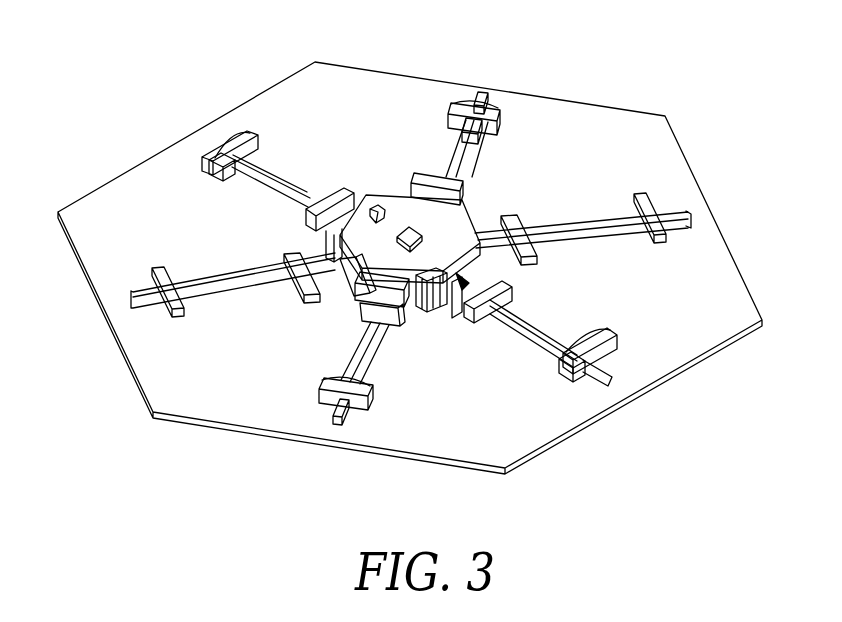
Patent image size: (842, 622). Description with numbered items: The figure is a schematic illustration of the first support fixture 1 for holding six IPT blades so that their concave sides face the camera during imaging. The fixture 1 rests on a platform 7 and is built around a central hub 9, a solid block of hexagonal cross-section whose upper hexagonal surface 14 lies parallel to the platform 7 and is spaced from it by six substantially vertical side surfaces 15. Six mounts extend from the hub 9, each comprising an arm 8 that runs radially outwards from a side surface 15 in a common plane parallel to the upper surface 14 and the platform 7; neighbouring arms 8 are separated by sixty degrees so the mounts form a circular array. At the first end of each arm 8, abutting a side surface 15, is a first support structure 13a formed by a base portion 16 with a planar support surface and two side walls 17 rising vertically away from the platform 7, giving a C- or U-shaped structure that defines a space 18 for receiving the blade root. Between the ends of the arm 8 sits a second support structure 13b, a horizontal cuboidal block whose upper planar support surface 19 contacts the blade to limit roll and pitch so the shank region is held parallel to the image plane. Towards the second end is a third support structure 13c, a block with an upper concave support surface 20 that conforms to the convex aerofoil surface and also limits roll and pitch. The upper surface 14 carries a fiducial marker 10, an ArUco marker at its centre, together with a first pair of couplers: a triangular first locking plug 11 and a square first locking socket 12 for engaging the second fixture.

The first support fixture 1 is at (258, 335).
The platform 7 is at (582, 127).
The arm 8 is at (551, 336).
The central hub 9 is at (340, 245).
The fiducial marker 10 is at (410, 227).
The first locking plug 11 is at (383, 207).
The first locking socket 12 is at (447, 238).
The first support structure 13a is at (455, 310).
The second support structure 13b is at (482, 312).
The third support structure 13c is at (580, 362).
The upper hexagonal surface 14 is at (362, 227).
The side surface 15 is at (406, 312).
The base portion 16 is at (354, 312).
The side wall 17 is at (540, 226).
The space 18 is at (460, 313).
The upper planar support surface 19 is at (512, 287).
The upper concave support surface 20 is at (600, 325).